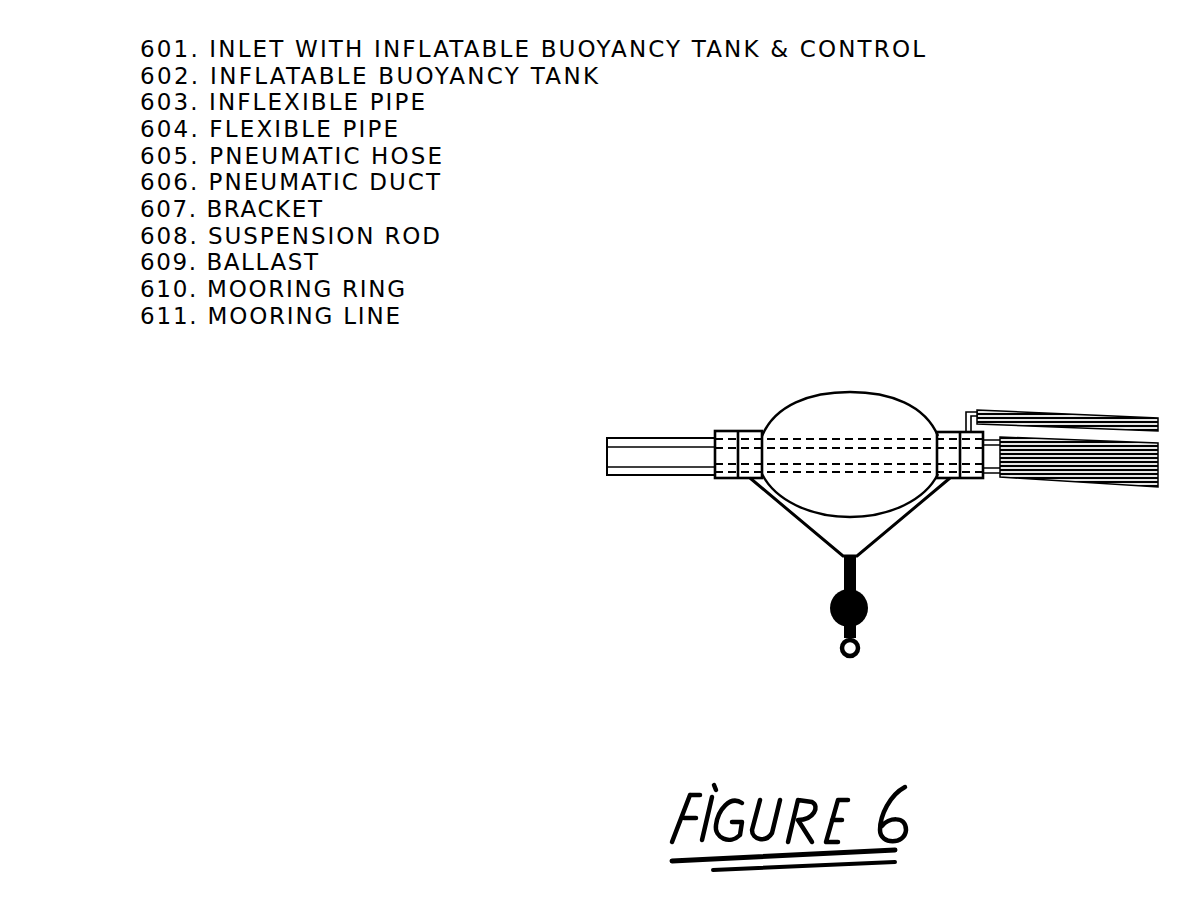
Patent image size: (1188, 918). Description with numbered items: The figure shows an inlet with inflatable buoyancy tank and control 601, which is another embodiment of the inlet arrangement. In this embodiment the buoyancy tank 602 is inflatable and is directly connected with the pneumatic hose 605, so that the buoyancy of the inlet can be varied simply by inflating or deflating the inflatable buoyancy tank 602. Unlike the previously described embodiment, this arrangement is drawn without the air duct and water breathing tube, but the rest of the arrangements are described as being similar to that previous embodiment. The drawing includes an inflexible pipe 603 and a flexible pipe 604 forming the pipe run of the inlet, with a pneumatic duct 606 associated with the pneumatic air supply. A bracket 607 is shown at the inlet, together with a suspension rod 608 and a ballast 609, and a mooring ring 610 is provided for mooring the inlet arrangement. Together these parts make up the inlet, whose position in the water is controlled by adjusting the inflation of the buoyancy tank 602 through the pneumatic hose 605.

The inlet with inflatable buoyancy tank and control 601 is at (825, 273).
The inflatable buoyancy tank 602 is at (782, 385).
The inflexible pipe 603 is at (637, 410).
The flexible pipe 604 is at (1060, 495).
The pneumatic hose 605 is at (1037, 385).
The pneumatic duct 606 is at (915, 428).
The bracket 607 is at (787, 530).
The suspension rod 608 is at (867, 570).
The ballast 609 is at (822, 622).
The mooring ring 610 is at (863, 652).